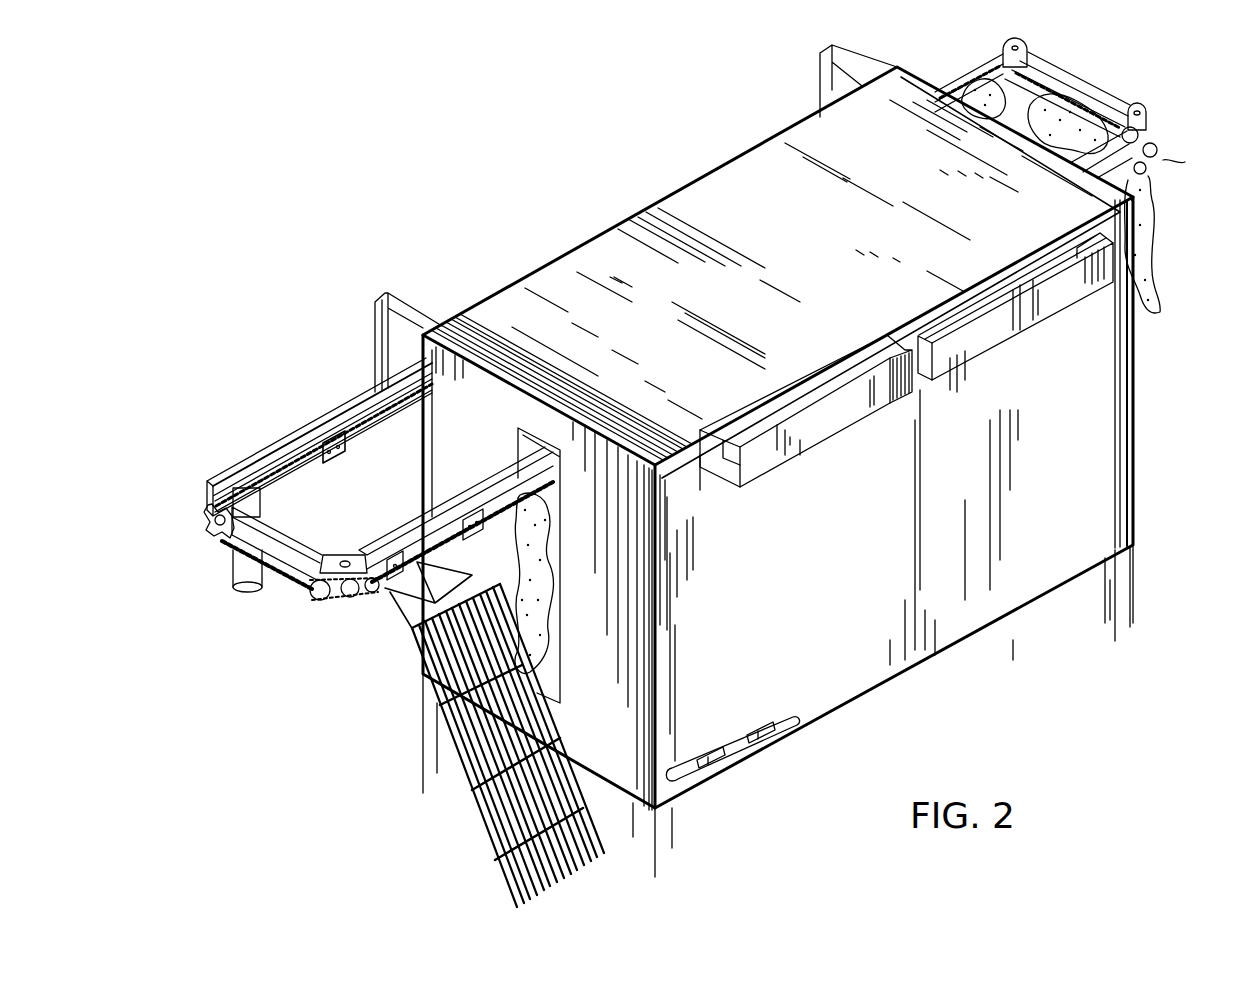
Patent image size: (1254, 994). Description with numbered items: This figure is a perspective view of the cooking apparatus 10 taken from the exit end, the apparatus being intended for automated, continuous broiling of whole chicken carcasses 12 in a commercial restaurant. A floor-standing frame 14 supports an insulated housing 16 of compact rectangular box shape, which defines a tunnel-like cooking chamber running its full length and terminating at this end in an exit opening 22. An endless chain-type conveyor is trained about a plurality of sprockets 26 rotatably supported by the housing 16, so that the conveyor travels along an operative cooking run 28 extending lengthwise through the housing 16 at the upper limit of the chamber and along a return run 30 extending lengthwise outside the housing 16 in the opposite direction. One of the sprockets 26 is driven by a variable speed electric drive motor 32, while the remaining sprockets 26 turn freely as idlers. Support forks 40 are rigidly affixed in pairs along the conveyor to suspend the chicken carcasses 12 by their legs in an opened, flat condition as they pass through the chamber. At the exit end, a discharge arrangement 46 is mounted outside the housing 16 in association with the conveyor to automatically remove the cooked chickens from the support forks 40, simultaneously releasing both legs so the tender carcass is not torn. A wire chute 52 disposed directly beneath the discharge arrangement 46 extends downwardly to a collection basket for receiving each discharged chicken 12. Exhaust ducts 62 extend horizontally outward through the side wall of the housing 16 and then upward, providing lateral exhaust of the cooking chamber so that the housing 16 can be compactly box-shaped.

The cooking apparatus 10 is at (288, 348).
The chicken carcasses 12 is at (550, 620).
The floor-standing frame 14 is at (660, 832).
The insulated housing 16 is at (770, 615).
The exit opening 22 is at (530, 448).
The sprockets 26 is at (208, 518).
The operative cooking run 28 is at (492, 473).
The return run 30 is at (334, 408).
The variable speed electric drive motor 32 is at (238, 572).
The support forks 40 is at (338, 598).
The discharge arrangement 46 is at (424, 604).
The wire chute 52 is at (492, 770).
The exhaust duct 62 is at (830, 424).